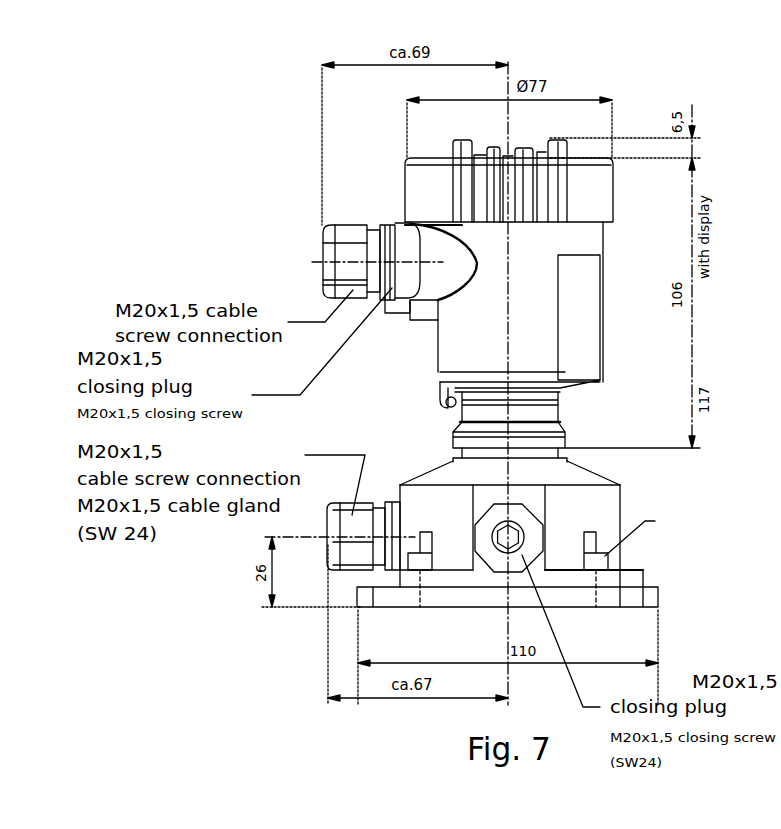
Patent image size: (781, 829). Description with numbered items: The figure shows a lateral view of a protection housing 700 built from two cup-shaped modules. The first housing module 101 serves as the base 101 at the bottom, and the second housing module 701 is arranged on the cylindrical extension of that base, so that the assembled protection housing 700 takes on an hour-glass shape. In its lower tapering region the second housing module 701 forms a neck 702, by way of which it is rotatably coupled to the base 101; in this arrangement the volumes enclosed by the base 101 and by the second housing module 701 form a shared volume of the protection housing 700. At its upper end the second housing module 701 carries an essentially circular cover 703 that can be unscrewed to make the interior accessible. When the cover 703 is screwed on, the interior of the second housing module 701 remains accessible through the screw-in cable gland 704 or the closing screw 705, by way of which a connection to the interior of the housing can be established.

The protection housing 700 is at (503, 335).
The second housing module 701 is at (590, 340).
The neck 702 is at (555, 412).
The cover 703 is at (608, 196).
The screw-in cable gland 704 is at (351, 232).
The closing screw 705 is at (390, 232).
The first housing module 101 is at (610, 498).